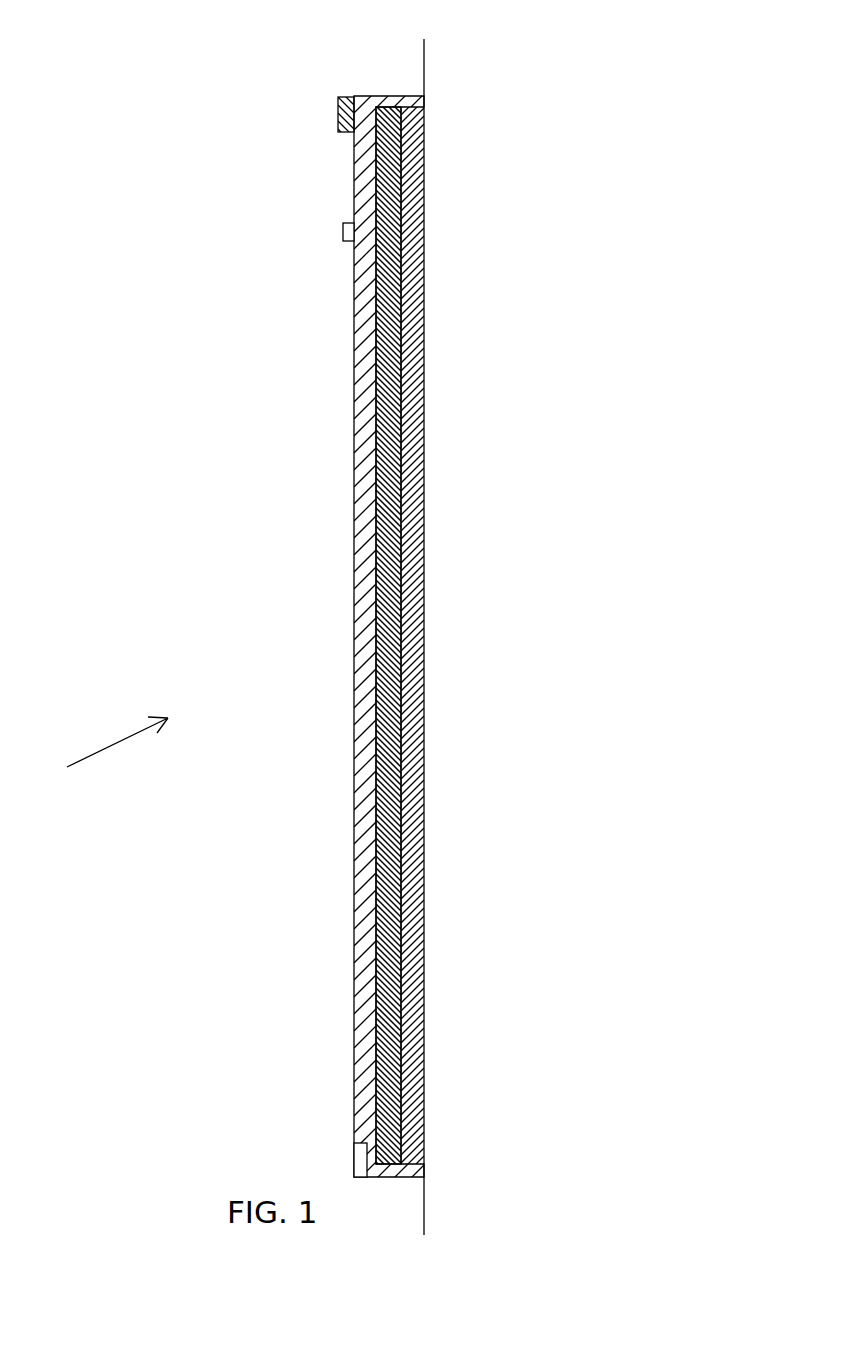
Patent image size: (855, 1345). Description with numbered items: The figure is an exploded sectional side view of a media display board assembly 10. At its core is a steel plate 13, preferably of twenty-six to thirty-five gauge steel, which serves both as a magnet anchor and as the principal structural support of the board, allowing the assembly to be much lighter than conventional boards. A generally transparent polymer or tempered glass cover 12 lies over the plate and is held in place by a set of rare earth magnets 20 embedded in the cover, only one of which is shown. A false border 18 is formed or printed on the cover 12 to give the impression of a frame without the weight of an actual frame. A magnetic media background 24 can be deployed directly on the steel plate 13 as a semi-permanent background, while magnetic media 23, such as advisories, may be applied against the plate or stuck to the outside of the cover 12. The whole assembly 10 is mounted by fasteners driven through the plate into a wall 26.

The media display board assembly 10 is at (98, 752).
The cover 12 is at (388, 388).
The steel plate 13 is at (425, 247).
The false border 18 is at (337, 112).
The magnets 20 is at (353, 1153).
The magnetic media 23 is at (343, 233).
The magnetic media background 24 is at (362, 348).
The wall 26 is at (424, 48).